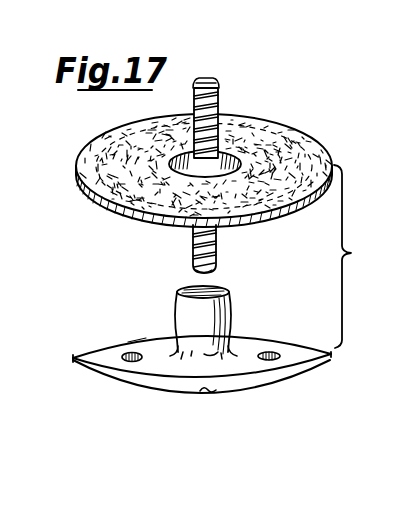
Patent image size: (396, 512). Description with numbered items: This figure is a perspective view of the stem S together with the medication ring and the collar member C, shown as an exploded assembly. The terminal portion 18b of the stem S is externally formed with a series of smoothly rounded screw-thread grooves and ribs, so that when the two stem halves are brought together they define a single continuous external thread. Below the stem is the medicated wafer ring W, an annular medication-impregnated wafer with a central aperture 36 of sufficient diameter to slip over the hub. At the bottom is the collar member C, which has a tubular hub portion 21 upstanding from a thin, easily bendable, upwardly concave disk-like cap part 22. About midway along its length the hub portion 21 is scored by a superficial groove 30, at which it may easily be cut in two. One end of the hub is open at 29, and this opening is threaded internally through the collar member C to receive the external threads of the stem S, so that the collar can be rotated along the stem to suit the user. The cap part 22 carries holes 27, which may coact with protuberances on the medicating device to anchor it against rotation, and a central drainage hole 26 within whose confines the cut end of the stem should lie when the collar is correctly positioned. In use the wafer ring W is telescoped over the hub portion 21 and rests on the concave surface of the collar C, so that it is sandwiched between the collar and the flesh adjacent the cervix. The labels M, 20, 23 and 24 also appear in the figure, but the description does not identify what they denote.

The terminal portion 18b is at (218, 96).
The central aperture 36 is at (235, 156).
The mat material M is at (142, 123).
The medicated wafer ring W is at (105, 199).
The stem S is at (224, 238).
The screw tip 20 is at (195, 270).
The opening 29 is at (222, 288).
The hub portion 21 is at (216, 312).
The superficial groove 30 is at (238, 327).
The collar member C is at (136, 325).
The cap part 22 is at (75, 356).
The holes 27 is at (124, 361).
The right end of plate 23 is at (296, 358).
The central drainage hole 26 is at (205, 397).
The base plate 24 is at (243, 382).